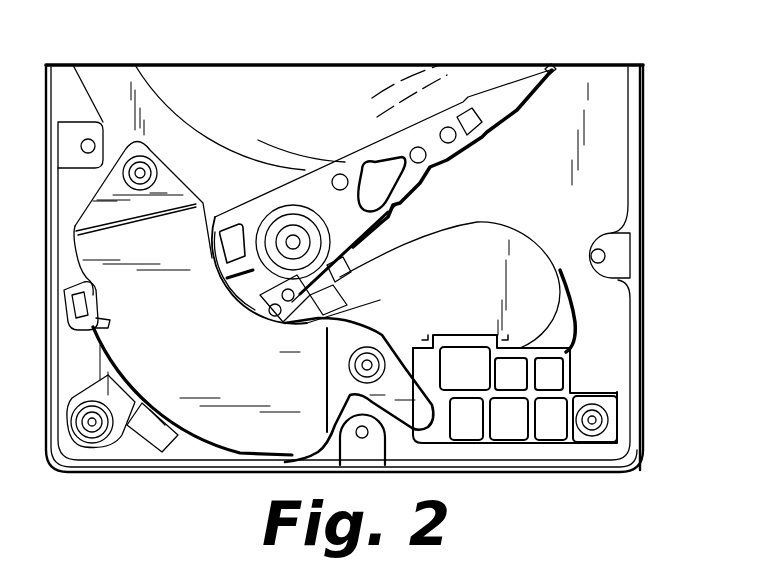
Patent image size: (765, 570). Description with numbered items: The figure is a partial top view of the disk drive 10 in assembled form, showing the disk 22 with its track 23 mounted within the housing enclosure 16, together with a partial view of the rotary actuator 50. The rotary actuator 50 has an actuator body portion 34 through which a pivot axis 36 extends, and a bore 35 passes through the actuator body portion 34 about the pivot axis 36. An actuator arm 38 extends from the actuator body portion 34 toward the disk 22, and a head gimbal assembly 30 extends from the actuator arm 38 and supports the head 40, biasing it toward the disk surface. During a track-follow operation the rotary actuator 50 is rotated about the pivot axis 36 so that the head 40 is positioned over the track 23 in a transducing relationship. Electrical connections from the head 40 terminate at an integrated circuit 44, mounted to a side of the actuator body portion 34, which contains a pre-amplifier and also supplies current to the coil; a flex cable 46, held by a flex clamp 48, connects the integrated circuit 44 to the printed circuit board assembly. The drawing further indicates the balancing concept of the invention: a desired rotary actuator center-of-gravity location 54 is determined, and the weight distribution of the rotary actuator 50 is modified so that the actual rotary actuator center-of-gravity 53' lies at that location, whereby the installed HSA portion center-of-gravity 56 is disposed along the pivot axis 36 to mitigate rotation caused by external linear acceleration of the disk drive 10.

The disk drive 10 is at (658, 108).
The housing enclosure 16 is at (645, 305).
The disk 22 is at (348, 97).
The track 23 is at (271, 134).
The head gimbal assembly 30 is at (510, 88).
The actuator body portion 34 is at (229, 197).
The bore 35 is at (270, 274).
The pivot axis 36 is at (305, 247).
The actuator arm 38 is at (352, 162).
The head 40 is at (548, 64).
The integrated circuit 44 is at (365, 250).
The flex cable 46 is at (508, 225).
The flex clamp 48 is at (560, 440).
The rotary actuator 50 is at (401, 87).
The actual rotary actuator center-of-gravity 53' is at (273, 183).
The desired rotary actuator center-of-gravity location 54 is at (280, 205).
The installed HSA portion center-of-gravity 56 is at (285, 246).